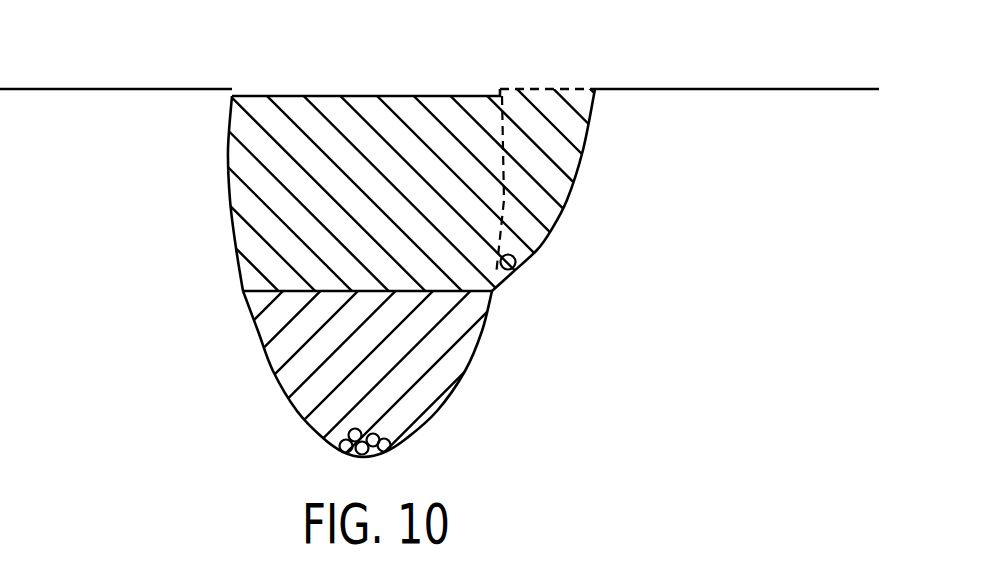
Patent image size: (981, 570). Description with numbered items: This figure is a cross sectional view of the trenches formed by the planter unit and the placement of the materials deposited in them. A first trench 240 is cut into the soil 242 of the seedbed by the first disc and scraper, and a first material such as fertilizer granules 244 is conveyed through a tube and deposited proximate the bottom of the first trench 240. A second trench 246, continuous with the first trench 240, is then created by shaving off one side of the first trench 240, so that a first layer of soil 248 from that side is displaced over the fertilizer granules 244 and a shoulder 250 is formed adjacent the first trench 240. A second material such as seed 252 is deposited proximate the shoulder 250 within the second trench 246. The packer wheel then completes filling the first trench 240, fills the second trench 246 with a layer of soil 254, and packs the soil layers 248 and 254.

The first trench 240 is at (470, 357).
The soil 242 is at (634, 108).
The fertilizer granules 244 is at (350, 432).
The second trench 246 is at (580, 163).
The first layer of soil 248 is at (302, 350).
The shoulder 250 is at (498, 284).
The seed 252 is at (519, 254).
The layer of soil 254 is at (385, 135).